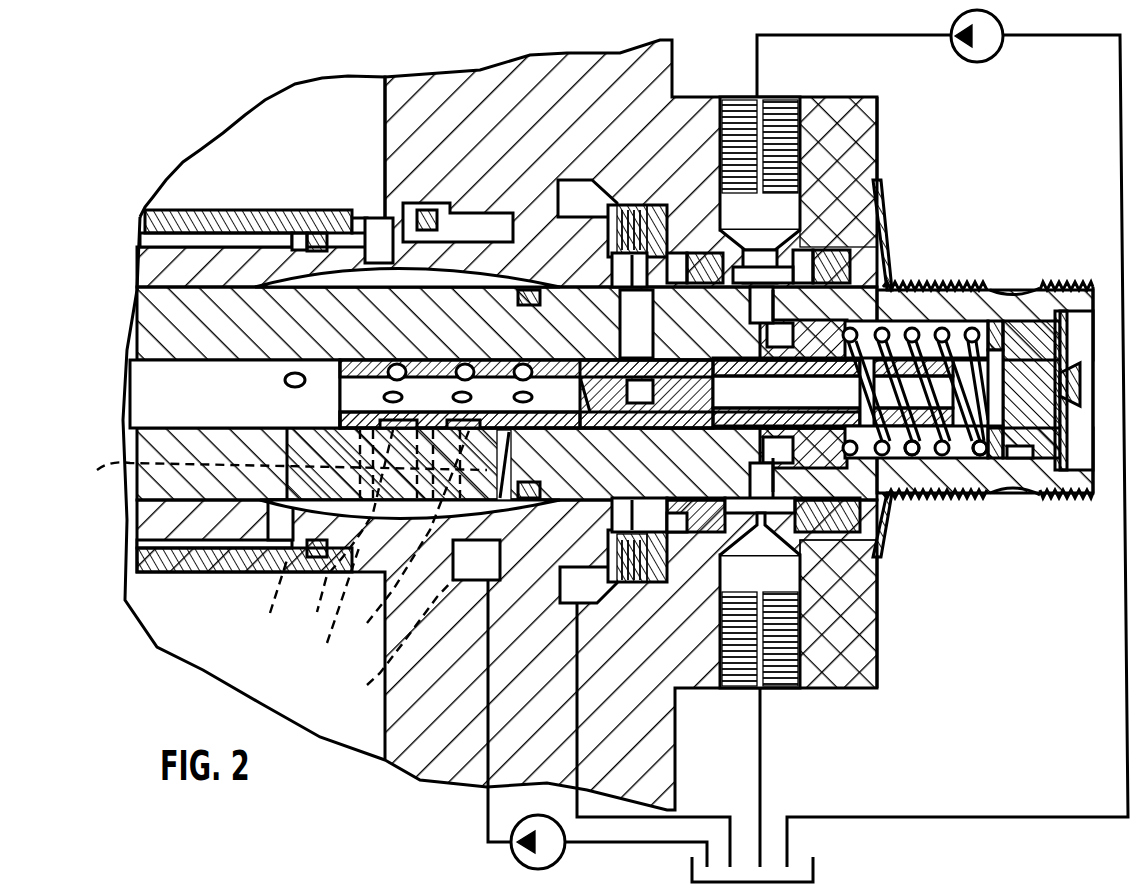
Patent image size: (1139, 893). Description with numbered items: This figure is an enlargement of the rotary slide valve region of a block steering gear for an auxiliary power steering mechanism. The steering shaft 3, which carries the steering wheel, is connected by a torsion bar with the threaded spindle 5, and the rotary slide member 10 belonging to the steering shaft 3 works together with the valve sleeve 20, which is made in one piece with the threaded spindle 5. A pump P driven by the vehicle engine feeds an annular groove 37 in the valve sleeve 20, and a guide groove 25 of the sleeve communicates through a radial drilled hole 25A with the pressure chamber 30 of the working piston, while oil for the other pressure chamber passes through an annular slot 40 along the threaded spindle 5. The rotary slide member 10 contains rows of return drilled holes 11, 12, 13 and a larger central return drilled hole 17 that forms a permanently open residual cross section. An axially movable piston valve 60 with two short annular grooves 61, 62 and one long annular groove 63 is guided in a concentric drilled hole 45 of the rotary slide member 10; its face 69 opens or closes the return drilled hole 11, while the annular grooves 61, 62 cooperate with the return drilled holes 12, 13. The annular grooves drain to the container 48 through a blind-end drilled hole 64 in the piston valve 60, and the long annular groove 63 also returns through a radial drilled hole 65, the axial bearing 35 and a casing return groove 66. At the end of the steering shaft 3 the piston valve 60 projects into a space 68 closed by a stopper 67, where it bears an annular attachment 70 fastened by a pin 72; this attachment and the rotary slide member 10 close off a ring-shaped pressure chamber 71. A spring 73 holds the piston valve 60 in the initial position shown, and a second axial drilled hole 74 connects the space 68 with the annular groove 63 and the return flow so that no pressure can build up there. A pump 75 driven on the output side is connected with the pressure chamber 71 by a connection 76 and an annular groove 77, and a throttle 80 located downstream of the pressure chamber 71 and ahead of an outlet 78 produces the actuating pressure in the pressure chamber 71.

The steering shaft 3 is at (1080, 287).
The threaded spindle 5 is at (118, 323).
The rotary slide member 10 is at (302, 320).
The return drilled hole 11 is at (267, 603).
The return drilled hole 12 is at (327, 607).
The return drilled hole 13 is at (398, 649).
The return drilled hole 17 is at (278, 478).
The valve sleeve 20 is at (340, 250).
The guide groove 25 is at (402, 275).
The radial drilled hole 25A is at (380, 240).
The pressure chamber 30 is at (253, 153).
The axial bearing 35 is at (655, 560).
The annular groove 37 is at (487, 213).
The annular slot 40 is at (153, 550).
The concentric drilled hole 45 is at (167, 402).
The container 48 is at (815, 862).
The piston valve 60 is at (297, 367).
The short annular groove 61 is at (399, 529).
The short annular groove 62 is at (408, 543).
The long annular groove 63 is at (476, 560).
The blind-end drilled hole 64 is at (375, 395).
The radial drilled hole 65 is at (690, 290).
The casing return groove 66 is at (573, 195).
The stopper 67 is at (1010, 300).
The space 68 is at (955, 343).
The face 69 is at (337, 418).
The annular attachment 70 is at (883, 513).
The pressure chamber 71 is at (762, 278).
The pin 72 is at (905, 475).
The spring 73 is at (975, 450).
The second axial drilled hole 74 is at (912, 393).
The pump 75 is at (987, 45).
The connection 76 is at (757, 147).
The annular groove 77 is at (765, 240).
The outlet 78 is at (773, 650).
The throttle 80 is at (803, 545).
The pump P is at (548, 850).